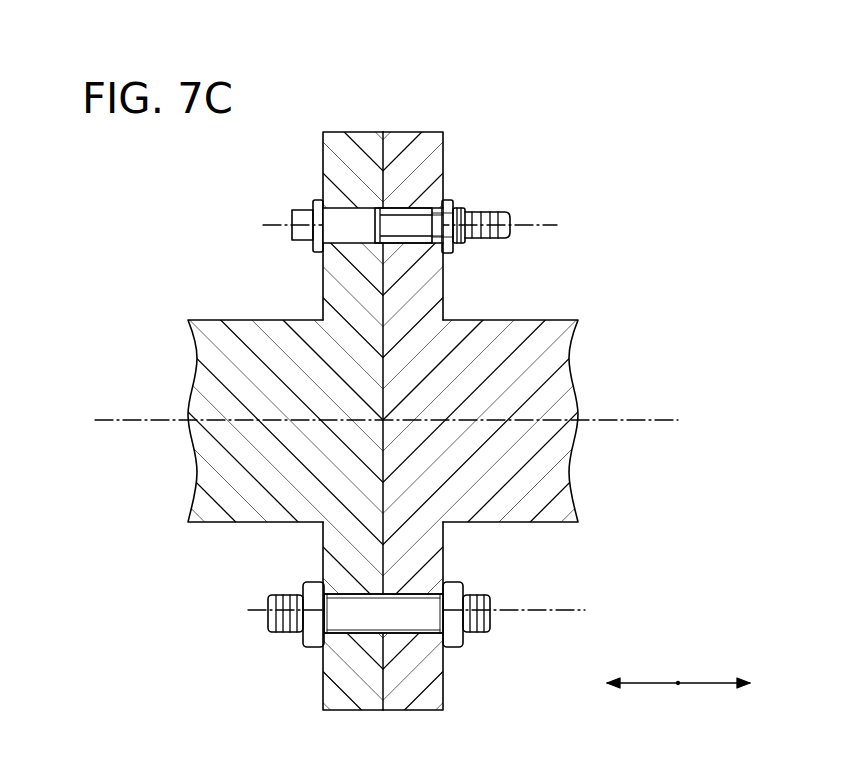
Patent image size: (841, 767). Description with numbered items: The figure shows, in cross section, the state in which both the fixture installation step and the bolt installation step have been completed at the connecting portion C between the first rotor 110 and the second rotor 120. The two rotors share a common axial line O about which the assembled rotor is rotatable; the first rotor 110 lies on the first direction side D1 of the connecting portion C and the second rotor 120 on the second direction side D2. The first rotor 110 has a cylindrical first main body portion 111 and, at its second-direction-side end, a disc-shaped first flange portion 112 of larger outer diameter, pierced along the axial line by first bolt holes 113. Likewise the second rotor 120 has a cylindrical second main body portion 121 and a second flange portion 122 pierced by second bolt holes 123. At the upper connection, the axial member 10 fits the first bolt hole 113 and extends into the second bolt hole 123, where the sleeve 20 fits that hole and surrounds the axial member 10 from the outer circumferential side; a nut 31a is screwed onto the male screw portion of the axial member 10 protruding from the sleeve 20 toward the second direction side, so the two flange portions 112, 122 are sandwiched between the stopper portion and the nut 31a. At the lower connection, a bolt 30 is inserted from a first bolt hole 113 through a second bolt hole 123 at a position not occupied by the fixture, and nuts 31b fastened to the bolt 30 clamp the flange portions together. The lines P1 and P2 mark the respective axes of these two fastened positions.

The axial member 10 is at (337, 207).
The sleeve 20 is at (450, 203).
The bolt 30 is at (368, 623).
The nut 31a is at (453, 207).
The nut 31b is at (313, 590).
The first rotor 110 is at (420, 400).
The first main body portion 111 is at (225, 497).
The first flange portion 112 is at (337, 542).
The first bolt hole 113 is at (353, 208).
The second rotor 120 is at (420, 393).
The second main body portion 121 is at (548, 499).
The second flange portion 122 is at (433, 536).
The second bolt hole 123 is at (412, 208).
The connecting portion C is at (383, 131).
The axial line O is at (648, 420).
The first bolt axis P1 is at (541, 222).
The second bolt axis P2 is at (562, 608).
The first direction side D1 is at (636, 682).
The second direction side D2 is at (716, 682).